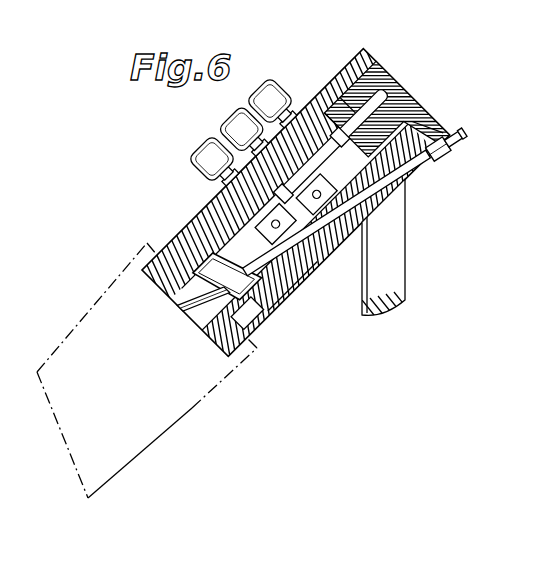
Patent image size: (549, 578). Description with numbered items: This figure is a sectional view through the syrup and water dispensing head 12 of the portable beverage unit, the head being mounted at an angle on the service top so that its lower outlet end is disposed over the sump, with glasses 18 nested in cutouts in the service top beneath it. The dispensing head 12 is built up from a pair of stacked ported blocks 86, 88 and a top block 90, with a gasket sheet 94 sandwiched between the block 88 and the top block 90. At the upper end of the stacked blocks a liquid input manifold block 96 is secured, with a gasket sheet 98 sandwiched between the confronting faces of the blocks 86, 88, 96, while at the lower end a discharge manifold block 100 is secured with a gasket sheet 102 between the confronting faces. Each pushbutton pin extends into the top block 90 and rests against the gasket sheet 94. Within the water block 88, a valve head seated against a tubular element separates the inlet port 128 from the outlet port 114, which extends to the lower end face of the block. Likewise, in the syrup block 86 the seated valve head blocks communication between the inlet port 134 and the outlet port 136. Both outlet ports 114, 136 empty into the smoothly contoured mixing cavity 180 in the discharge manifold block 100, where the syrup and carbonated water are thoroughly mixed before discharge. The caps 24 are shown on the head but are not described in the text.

The dispensing head 12 is at (186, 212).
The glasses 18 is at (188, 404).
The caps 24 is at (218, 132).
The ported block 86 is at (407, 193).
The ported block 88 is at (394, 84).
The top block 90 is at (371, 52).
The gasket sheet 94 is at (387, 71).
The liquid input manifold block 96 is at (430, 128).
The gasket sheet 98 is at (418, 165).
The discharge manifold block 100 is at (205, 334).
The gasket sheet 102 is at (292, 297).
The outlet port 114 is at (227, 275).
The inlet port 128 is at (331, 232).
The inlet port 134 is at (402, 214).
The outlet port 136 is at (277, 278).
The mixing cavity 180 is at (256, 320).